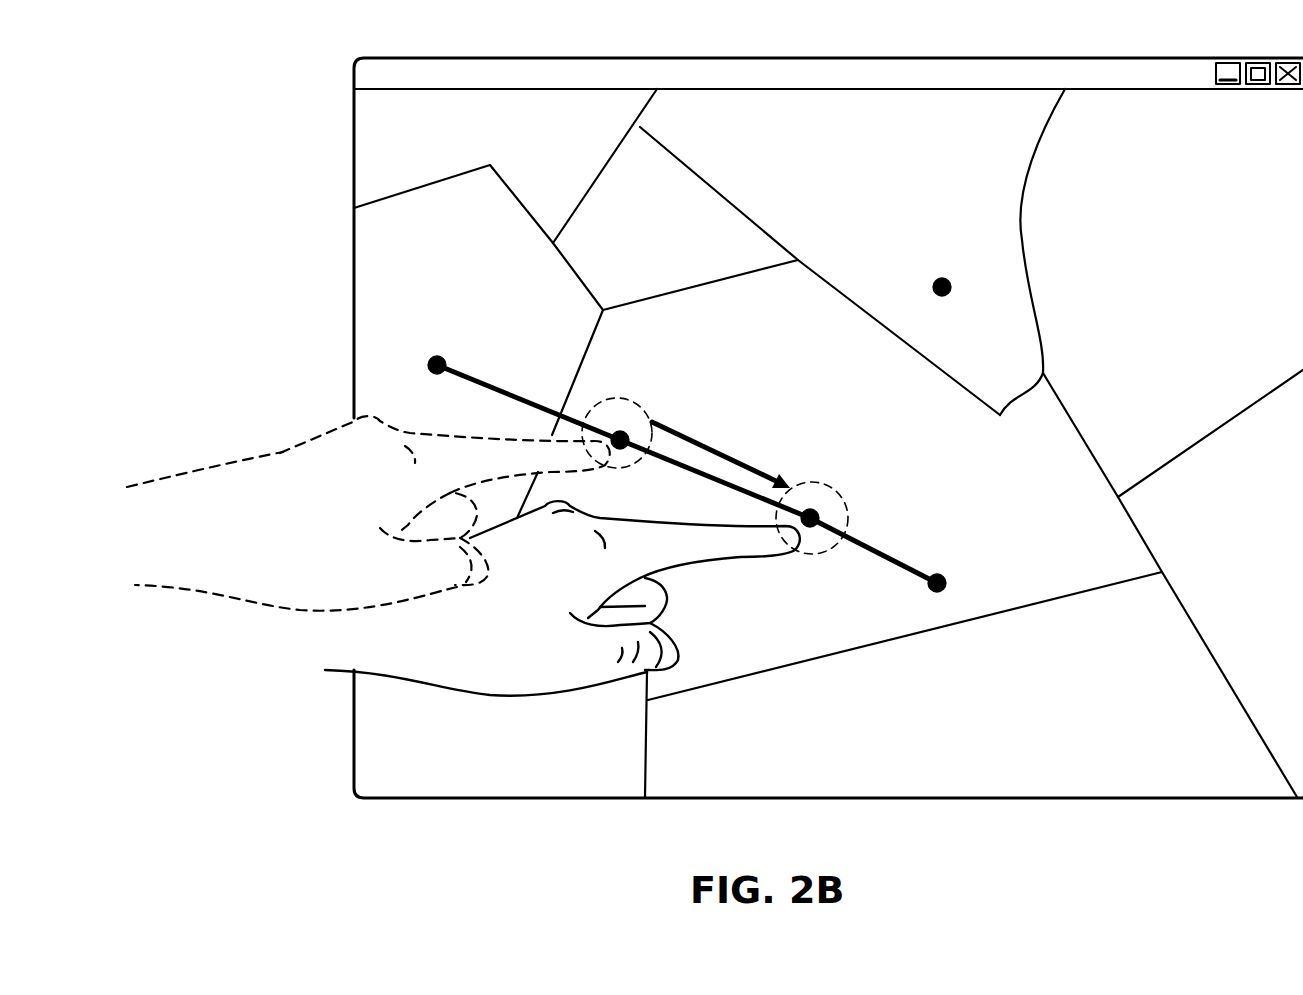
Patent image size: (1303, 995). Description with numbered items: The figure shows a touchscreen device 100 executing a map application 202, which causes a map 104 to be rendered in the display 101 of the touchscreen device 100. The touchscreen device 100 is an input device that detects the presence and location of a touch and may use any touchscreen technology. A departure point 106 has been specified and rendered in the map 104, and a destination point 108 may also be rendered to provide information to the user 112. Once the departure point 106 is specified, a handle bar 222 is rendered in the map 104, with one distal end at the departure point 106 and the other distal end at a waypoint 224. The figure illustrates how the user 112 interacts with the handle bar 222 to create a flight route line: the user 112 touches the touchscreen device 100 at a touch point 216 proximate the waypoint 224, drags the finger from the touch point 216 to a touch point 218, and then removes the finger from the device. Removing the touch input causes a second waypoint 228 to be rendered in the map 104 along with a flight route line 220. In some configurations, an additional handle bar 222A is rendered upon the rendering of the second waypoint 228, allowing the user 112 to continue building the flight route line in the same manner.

The touchscreen device 100 is at (332, 67).
The display 101 is at (384, 139).
The map 104 is at (1285, 168).
The departure point 106 is at (428, 358).
The destination point 108 is at (944, 278).
The user 112 is at (277, 478).
The map application 202 is at (948, 85).
The touch point 216 is at (617, 394).
The touch point 218 is at (823, 553).
The flight route line 220 is at (545, 408).
The handle bar 222 is at (495, 366).
The additional handle bar 222A is at (926, 557).
The waypoint 224 is at (627, 428).
The second waypoint 228 is at (822, 514).